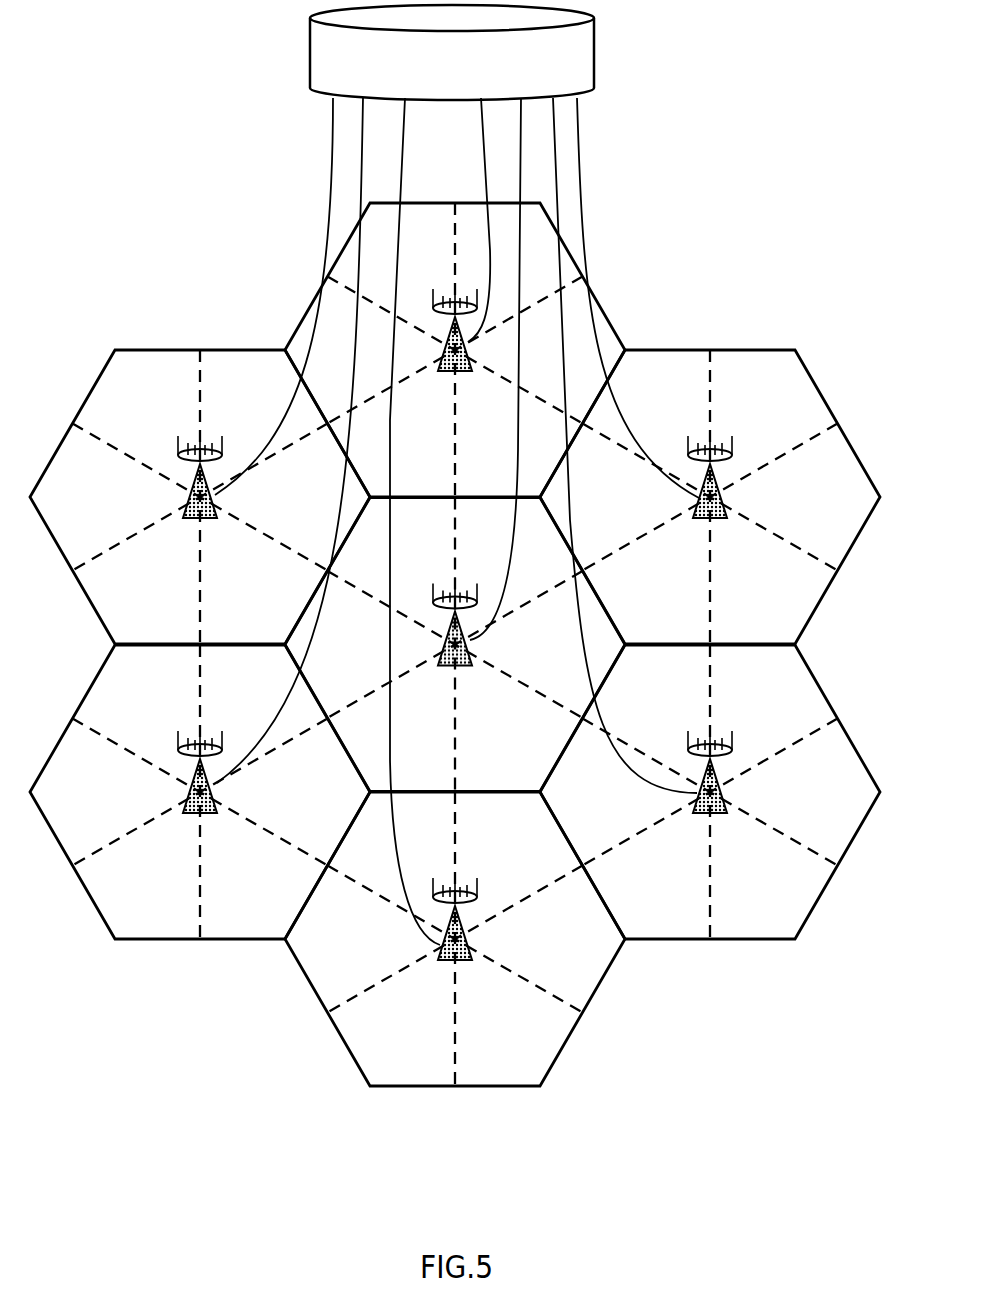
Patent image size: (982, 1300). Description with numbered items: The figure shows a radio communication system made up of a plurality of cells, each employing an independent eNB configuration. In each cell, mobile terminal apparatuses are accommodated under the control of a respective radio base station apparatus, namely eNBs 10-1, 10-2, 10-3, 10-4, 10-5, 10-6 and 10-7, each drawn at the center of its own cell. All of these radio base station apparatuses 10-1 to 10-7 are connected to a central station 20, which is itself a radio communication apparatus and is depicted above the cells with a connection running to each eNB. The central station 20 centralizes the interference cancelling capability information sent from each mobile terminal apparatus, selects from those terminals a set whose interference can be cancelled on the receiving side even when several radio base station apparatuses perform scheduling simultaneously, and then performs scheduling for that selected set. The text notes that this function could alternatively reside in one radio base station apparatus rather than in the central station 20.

The central station 20 is at (596, 44).
The radio base station apparatus eNB 10-1 is at (467, 666).
The radio base station apparatus eNB 10-2 is at (722, 519).
The radio base station apparatus eNB 10-3 is at (467, 372).
The radio base station apparatus eNB 10-4 is at (212, 519).
The radio base station apparatus eNB 10-5 is at (212, 814).
The radio base station apparatus eNB 10-6 is at (467, 961).
The radio base station apparatus eNB 10-7 is at (722, 814).